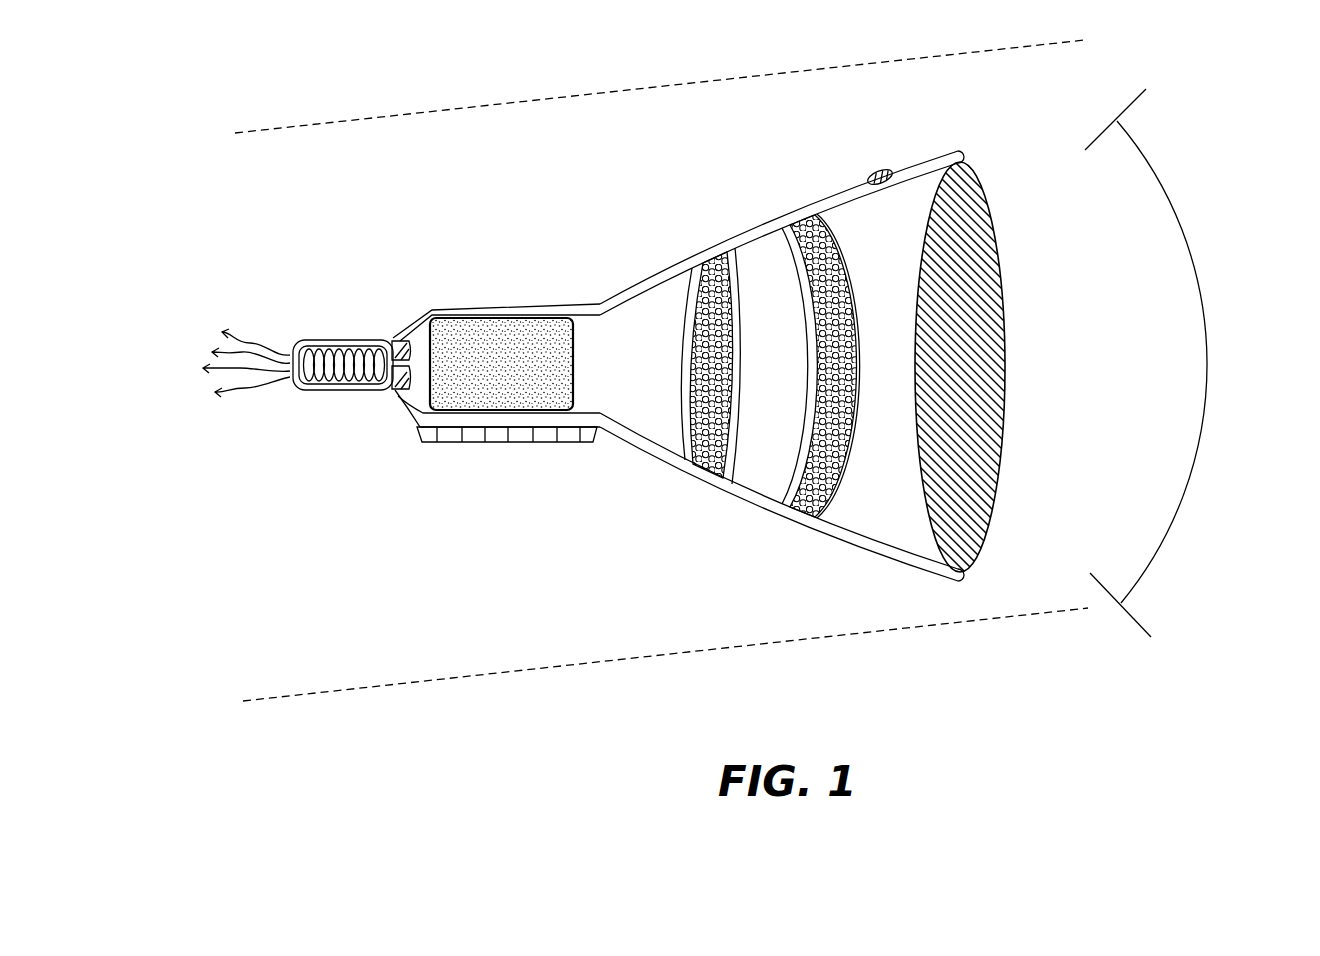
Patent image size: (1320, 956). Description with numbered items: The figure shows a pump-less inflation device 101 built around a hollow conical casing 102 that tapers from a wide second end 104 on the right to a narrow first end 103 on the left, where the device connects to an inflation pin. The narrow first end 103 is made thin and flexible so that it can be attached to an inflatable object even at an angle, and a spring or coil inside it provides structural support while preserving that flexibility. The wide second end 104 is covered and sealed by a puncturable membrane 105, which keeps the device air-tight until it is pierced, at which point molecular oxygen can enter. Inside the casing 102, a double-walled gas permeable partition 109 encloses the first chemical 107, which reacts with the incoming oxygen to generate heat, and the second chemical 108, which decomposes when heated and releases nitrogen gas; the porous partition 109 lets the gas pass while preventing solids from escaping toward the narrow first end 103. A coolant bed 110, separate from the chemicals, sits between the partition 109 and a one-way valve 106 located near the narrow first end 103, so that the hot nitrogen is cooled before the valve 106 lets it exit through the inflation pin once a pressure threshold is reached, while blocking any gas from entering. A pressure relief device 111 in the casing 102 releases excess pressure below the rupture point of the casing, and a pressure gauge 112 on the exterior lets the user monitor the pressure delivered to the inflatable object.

The pump-less inflation device 101 is at (286, 606).
The hollow conical casing 102 is at (957, 150).
The narrow first end 103 is at (356, 348).
The wide second end 104 is at (743, 370).
The puncturable membrane 105 is at (1003, 322).
The one-way valve 106 is at (394, 392).
The first chemical 107 is at (704, 267).
The second chemical 108 is at (697, 478).
The gas permeable partition 109 is at (716, 256).
The coolant bed 110 is at (501, 340).
The pressure relief device 111 is at (868, 168).
The pressure gauge 112 is at (473, 441).